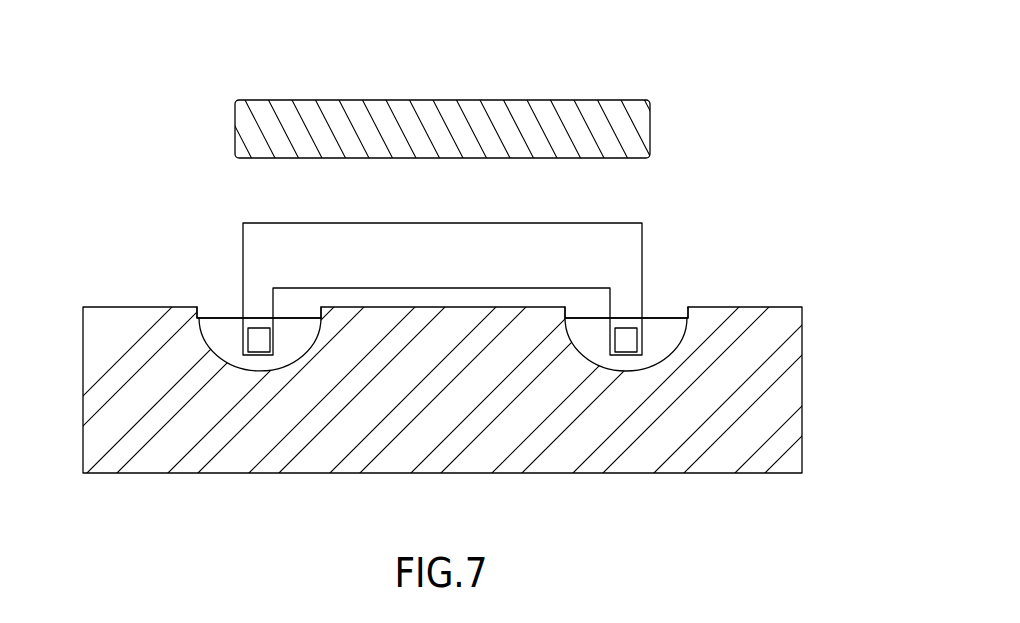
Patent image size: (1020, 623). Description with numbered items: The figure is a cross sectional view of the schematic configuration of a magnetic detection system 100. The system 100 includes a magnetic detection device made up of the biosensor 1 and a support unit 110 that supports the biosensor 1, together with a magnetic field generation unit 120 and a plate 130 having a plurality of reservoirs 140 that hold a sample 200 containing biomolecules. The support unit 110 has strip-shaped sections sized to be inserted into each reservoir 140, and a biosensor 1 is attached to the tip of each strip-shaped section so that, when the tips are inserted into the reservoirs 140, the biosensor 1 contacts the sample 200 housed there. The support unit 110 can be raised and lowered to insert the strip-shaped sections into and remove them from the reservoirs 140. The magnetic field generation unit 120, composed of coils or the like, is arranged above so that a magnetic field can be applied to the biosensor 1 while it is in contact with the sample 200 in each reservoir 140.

The magnetic detection system 100 is at (687, 173).
The support unit 110 is at (343, 222).
The magnetic field generation unit 120 is at (467, 99).
The plate 130 is at (773, 398).
The reservoir 140 is at (207, 310).
The sample 200 is at (220, 340).
The biosensor 1 is at (258, 340).